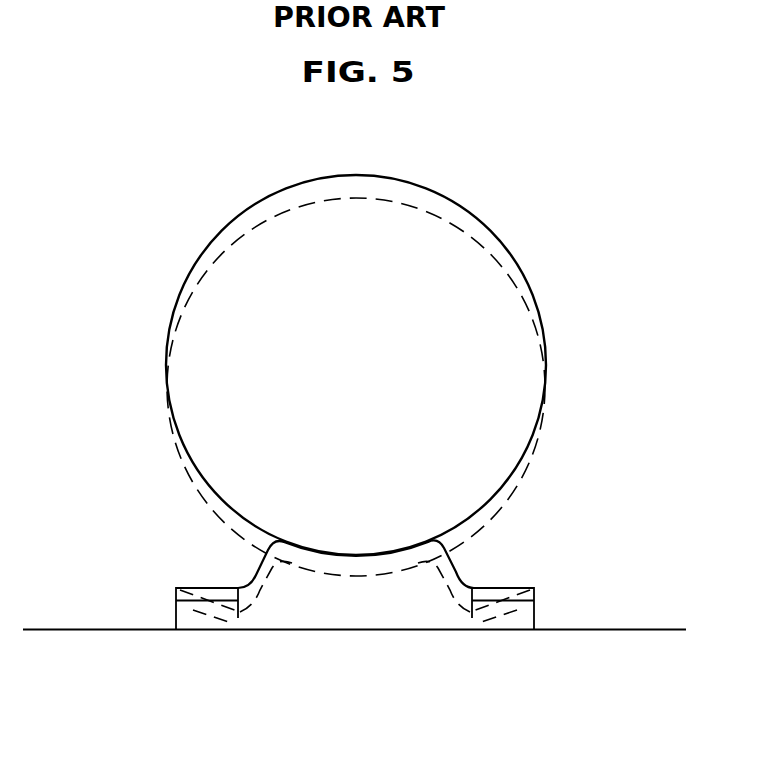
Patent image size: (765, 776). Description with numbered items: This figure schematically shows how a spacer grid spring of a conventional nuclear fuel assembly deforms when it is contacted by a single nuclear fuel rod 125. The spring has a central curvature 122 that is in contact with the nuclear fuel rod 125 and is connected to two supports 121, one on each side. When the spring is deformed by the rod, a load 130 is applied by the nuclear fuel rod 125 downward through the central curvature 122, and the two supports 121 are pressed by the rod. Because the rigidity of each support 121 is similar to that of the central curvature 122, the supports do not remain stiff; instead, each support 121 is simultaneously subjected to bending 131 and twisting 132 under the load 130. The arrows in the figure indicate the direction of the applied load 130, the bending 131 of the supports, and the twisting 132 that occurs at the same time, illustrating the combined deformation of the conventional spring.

The nuclear fuel rod 125 is at (450, 280).
The central curvature 122 is at (360, 552).
The support 121 is at (496, 592).
The load 130 is at (356, 542).
The bending 131 is at (184, 676).
The twisting 132 is at (218, 552).